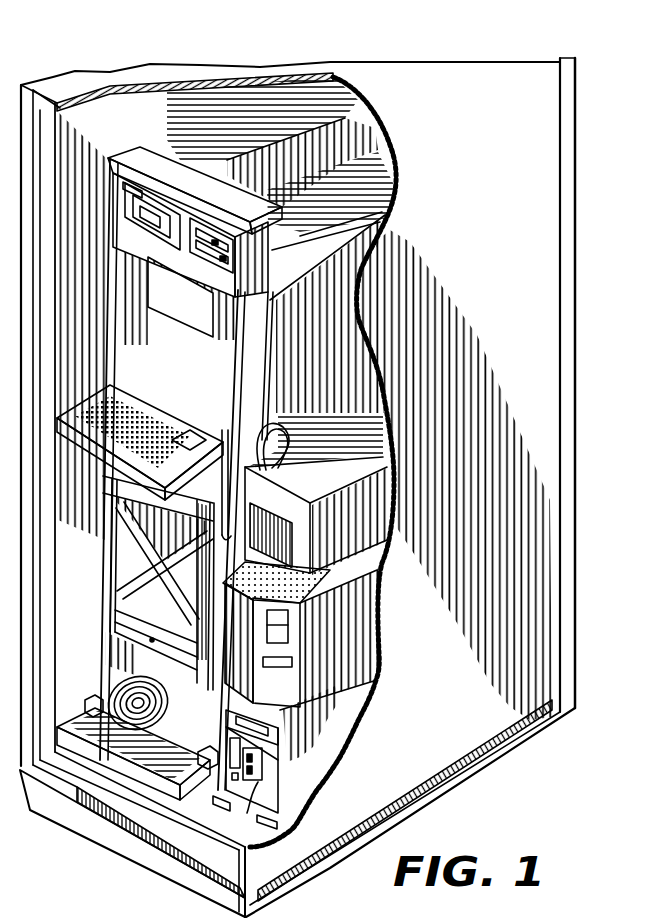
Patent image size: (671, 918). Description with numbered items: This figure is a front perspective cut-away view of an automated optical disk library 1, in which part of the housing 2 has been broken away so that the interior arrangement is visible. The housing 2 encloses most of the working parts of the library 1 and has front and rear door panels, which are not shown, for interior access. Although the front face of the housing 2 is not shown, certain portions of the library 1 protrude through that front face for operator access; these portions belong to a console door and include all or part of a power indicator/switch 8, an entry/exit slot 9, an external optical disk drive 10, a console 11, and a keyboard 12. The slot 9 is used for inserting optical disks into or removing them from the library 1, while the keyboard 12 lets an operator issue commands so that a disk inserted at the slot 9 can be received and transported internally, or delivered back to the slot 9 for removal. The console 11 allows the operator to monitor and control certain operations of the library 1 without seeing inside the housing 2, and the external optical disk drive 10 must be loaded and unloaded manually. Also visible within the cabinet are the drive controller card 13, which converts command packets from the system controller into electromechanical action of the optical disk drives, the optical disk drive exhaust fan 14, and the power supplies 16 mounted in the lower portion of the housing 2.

The automated optical disk library 1 is at (598, 82).
The housing 2 is at (578, 152).
The power indicator/switch 8 is at (157, 210).
The entry/exit slot 9 is at (156, 207).
The external optical disk drive 10 is at (207, 199).
The console 11 is at (210, 340).
The keyboard 12 is at (167, 418).
The drive controller card 13 is at (318, 513).
The optical disk drive exhaust fan 14 is at (112, 684).
The power supplies 16 is at (351, 706).